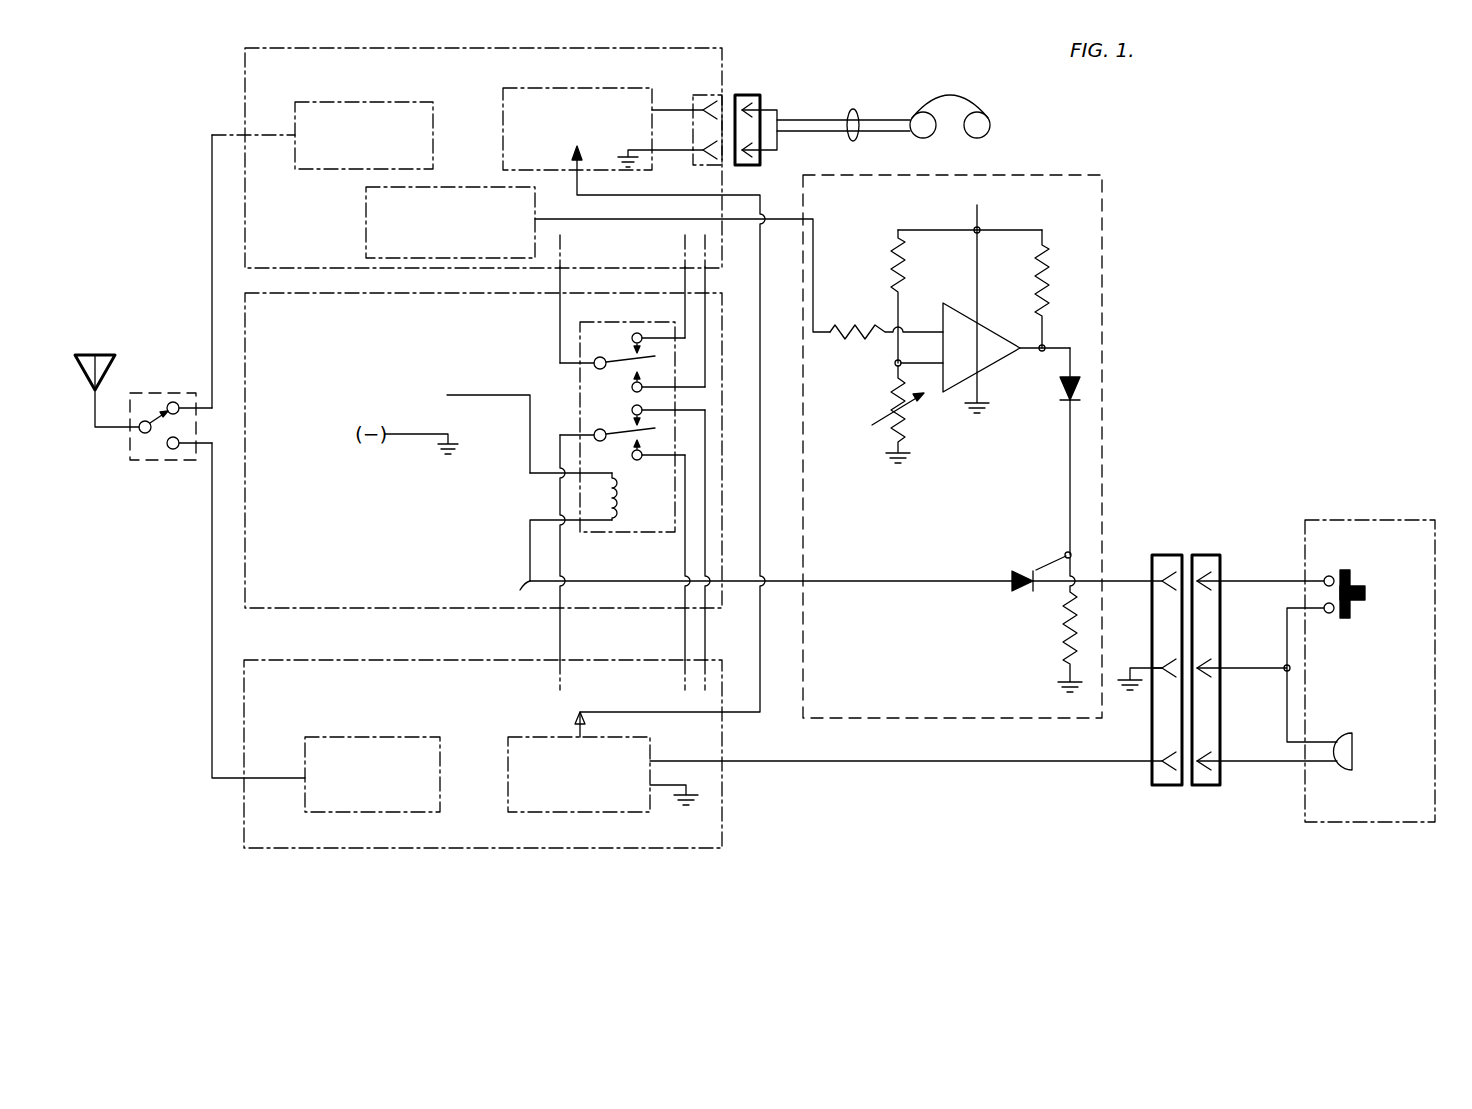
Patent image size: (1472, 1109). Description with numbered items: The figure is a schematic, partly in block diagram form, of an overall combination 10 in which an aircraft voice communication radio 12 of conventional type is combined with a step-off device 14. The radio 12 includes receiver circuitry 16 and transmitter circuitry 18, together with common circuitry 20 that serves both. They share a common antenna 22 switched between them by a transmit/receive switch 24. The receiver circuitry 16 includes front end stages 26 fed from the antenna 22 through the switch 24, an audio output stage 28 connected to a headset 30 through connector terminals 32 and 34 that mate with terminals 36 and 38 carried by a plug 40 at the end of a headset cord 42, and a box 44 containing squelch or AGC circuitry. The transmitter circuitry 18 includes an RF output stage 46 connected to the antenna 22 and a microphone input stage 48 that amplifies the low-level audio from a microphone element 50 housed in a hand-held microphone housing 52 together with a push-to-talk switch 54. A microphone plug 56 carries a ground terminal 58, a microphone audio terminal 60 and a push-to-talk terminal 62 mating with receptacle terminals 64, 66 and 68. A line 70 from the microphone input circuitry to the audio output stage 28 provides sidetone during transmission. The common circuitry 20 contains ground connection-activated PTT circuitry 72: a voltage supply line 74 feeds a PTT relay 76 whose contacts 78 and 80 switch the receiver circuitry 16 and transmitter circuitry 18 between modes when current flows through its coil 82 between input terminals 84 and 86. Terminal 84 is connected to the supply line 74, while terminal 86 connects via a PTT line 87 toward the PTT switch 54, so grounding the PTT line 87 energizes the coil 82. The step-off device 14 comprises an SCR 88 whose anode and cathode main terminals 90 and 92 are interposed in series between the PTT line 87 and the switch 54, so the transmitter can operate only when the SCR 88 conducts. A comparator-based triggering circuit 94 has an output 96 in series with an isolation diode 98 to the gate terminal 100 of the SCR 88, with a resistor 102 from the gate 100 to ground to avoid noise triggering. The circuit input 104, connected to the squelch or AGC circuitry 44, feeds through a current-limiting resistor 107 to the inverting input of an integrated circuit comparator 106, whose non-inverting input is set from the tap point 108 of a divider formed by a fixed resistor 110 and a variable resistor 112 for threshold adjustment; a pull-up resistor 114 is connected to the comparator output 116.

The overall combination 10 is at (1188, 178).
The aircraft voice communication radio 12 is at (808, 86).
The step-off device 14 is at (1100, 279).
The receiver circuitry 16 is at (246, 100).
The transmitter circuitry 18 is at (272, 856).
The common circuitry 20 is at (270, 612).
The antenna 22 is at (110, 355).
The transmit/receive switch 24 is at (190, 392).
The front end stages 26 is at (306, 170).
The audio output stage 28 is at (594, 97).
The headset 30 is at (968, 108).
The connector terminal 32 is at (706, 102).
The connector terminal 34 is at (702, 141).
The connector terminal 36 is at (722, 115).
The connector terminal 38 is at (746, 160).
The plug 40 is at (756, 98).
The headset cord 42 is at (858, 110).
The squelch or automatic gain control (AGC) circuitry 44 is at (460, 200).
The RF output stage 46 is at (422, 737).
The microphone input stage 48 is at (558, 736).
The microphone element 50 is at (1355, 760).
The hand-held microphone housing 52 is at (1358, 520).
The push-to-talk (PTT) switch 54 is at (1385, 594).
The microphone plug 56 is at (1210, 562).
The circuit reference (ground) connector terminal 58 is at (1212, 688).
The microphone audio circuit connector terminal 60 is at (1205, 790).
The push-to-talk circuit connector terminal 62 is at (1215, 596).
The connector terminal 64 is at (1158, 667).
The connector terminal 66 is at (1170, 785).
The connector terminal 68 is at (1165, 575).
The line 70 is at (759, 430).
The push-to-talk (PTT) circuitry 72 is at (570, 451).
The voltage supply line 74 is at (471, 395).
The PTT relay 76 is at (578, 398).
The contacts 78 is at (626, 353).
The contacts 80 is at (618, 418).
The coil 82 is at (622, 500).
The input terminal 84 is at (582, 476).
The input terminal 86 is at (572, 522).
The PTT line 87 is at (768, 580).
The SCR 88 is at (1016, 570).
The anode main terminal 90 is at (970, 583).
The cathode main terminal 92 is at (1056, 586).
The comparator-based triggering circuit 94 is at (962, 368).
The output 96 is at (1069, 428).
The isolation diode 98 is at (1075, 376).
The gate terminal 100 is at (1040, 566).
The resistor 102 is at (1064, 650).
The input 104 is at (813, 243).
The integrated circuit comparator 106 is at (995, 332).
The current-limiting resistor 107 is at (848, 330).
The tap point 108 is at (895, 366).
The fixed resistor 110 is at (903, 256).
The variable resistor 112 is at (904, 441).
The pull-up resistor 114 is at (1046, 260).
The output 116 is at (1031, 352).